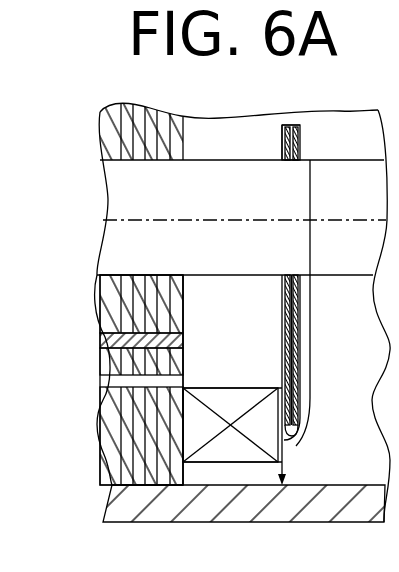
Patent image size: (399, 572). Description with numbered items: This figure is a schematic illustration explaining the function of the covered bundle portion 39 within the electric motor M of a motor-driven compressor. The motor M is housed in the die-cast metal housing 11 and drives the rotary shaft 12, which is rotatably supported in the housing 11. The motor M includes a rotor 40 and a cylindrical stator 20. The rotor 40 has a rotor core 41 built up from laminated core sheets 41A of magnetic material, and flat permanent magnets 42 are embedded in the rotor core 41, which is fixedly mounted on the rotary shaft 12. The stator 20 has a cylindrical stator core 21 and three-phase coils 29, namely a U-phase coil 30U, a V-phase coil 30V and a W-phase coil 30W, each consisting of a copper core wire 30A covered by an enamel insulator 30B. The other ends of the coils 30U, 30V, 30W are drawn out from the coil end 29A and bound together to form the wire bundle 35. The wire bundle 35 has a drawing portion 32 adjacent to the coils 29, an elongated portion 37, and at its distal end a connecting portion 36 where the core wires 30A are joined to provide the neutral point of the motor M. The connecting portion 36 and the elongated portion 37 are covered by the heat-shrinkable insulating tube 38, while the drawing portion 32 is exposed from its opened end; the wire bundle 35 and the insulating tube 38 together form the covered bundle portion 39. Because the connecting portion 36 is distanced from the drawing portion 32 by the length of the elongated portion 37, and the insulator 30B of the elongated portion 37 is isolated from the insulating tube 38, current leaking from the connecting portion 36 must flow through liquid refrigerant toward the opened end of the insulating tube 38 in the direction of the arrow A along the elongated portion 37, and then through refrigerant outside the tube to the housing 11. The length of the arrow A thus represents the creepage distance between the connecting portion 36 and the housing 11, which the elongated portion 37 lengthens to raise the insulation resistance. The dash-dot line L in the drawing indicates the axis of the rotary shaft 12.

The housing 11 is at (233, 520).
The rotary shaft 12 is at (357, 270).
The stator 20 is at (139, 498).
The stator core 21 is at (186, 470).
The three-phase coils 29 is at (240, 385).
The coil end 29A is at (212, 388).
The core wire 30A is at (284, 140).
The insulator 30B is at (284, 156).
The U-phase coil 30U is at (284, 291).
The V-phase coil 30V is at (286, 313).
The W-phase coil 30W is at (290, 334).
The drawing portion 32 is at (300, 405).
The wire bundle 35 is at (326, 369).
The connecting portion 36 is at (306, 125).
The elongated portion 37 is at (310, 256).
The insulating tube 38 is at (281, 126).
The covered bundle portion 39 is at (290, 112).
The rotor 40 is at (55, 308).
The rotor core 41 is at (98, 304).
The permanent magnets 42 is at (106, 339).
The core sheets 41A is at (188, 282).
The arrow A is at (286, 455).
The center axis L is at (170, 222).
The electric motor M is at (90, 450).